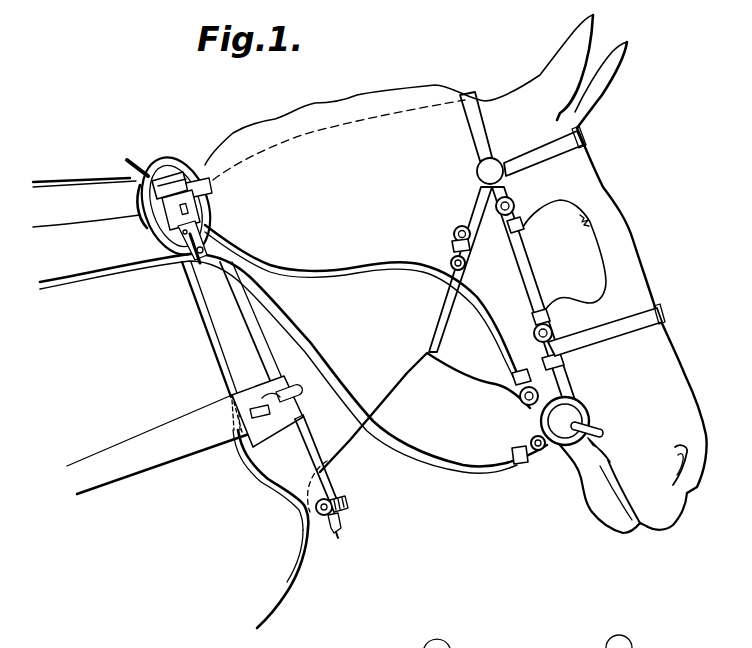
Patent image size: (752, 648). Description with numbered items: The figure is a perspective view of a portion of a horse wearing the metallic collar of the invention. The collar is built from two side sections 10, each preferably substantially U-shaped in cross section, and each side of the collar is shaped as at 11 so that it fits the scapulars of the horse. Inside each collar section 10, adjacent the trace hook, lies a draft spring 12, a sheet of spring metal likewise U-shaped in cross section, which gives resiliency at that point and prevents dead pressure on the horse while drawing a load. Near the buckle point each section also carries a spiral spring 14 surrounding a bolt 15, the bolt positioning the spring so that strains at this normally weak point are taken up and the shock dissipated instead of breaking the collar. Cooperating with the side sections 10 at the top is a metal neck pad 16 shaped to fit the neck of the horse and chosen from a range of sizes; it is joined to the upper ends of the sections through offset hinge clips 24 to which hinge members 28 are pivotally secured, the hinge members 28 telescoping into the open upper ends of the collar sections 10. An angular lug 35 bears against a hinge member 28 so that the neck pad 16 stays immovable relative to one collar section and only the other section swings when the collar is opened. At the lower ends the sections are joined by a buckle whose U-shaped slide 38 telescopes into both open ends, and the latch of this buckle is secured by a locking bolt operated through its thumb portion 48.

The side section 10 is at (230, 337).
The scapular-fitting shaped portion 11 is at (243, 461).
The draft spring 12 is at (268, 440).
The spiral spring 14 is at (307, 543).
The bolt 15 is at (346, 508).
The neck pad 16 is at (136, 203).
The offset hinge clip 24 is at (152, 177).
The hinge member 28 is at (160, 226).
The angular lug 35 is at (190, 188).
The U-shaped slide 38 is at (331, 499).
The thumb portion 48 is at (334, 527).